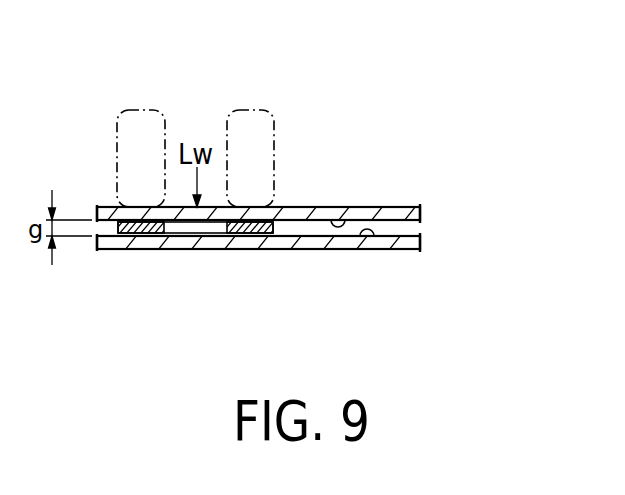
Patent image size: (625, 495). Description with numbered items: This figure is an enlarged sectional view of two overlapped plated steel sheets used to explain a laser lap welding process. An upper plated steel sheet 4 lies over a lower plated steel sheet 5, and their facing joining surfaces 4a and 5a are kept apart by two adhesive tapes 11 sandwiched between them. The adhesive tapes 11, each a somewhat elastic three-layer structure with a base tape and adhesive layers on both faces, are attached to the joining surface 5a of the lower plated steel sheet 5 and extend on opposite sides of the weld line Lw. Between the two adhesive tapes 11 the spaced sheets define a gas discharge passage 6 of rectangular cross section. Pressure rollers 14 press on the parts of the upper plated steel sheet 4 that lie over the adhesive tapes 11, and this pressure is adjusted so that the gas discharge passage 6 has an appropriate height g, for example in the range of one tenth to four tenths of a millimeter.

The upper plated steel sheet 4 is at (409, 212).
The joining surface of the upper plated steel sheet 4a is at (343, 219).
The lower plated steel sheet 5 is at (408, 250).
The joining surface of the lower plated steel sheet 5a is at (361, 250).
The gas discharge passage 6 is at (195, 237).
The adhesive tape 11 is at (127, 249).
The pressure roller 14 is at (140, 108).